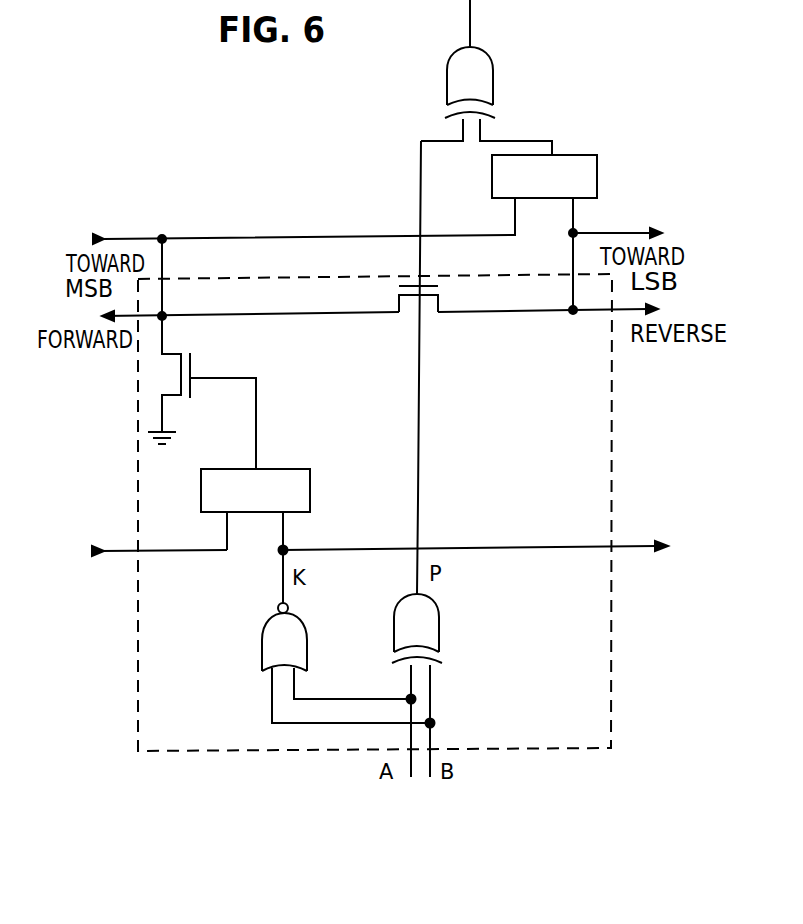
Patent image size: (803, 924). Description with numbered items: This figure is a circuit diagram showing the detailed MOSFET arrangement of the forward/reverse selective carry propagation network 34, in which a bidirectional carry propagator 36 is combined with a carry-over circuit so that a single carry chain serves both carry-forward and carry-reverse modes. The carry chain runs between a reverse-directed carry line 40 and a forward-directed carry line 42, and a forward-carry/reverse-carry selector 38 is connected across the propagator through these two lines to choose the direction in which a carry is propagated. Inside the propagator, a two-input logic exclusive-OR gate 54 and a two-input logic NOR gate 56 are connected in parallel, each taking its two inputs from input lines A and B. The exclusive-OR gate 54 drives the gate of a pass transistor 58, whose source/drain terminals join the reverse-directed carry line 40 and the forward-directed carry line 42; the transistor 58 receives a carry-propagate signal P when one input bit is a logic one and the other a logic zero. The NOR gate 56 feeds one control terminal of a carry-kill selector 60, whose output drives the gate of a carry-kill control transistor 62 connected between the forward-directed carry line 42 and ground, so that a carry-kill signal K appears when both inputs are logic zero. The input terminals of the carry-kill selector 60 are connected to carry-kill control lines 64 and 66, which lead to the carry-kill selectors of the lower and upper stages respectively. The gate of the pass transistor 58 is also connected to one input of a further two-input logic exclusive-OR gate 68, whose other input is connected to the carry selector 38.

The forward/reverse selective carry propagation network 34 is at (356, 190).
The bidirectional carry propagator 36 is at (537, 405).
The forward-carry/reverse-carry selector 38 is at (597, 175).
The reverse-directed carry line 40 is at (490, 312).
The forward-directed carry line 42 is at (276, 313).
The two-input logic exclusive-OR gate 54 is at (440, 630).
The two-input logic NOR gate 56 is at (262, 648).
The pass transistor 58 is at (408, 312).
The carry-kill selector 60 is at (310, 488).
The carry-kill control transistor 62 is at (210, 359).
The carry-kill control line 64 is at (520, 548).
The carry-kill control line 66 is at (170, 553).
The two-input logic exclusive-OR gate 68 is at (494, 85).